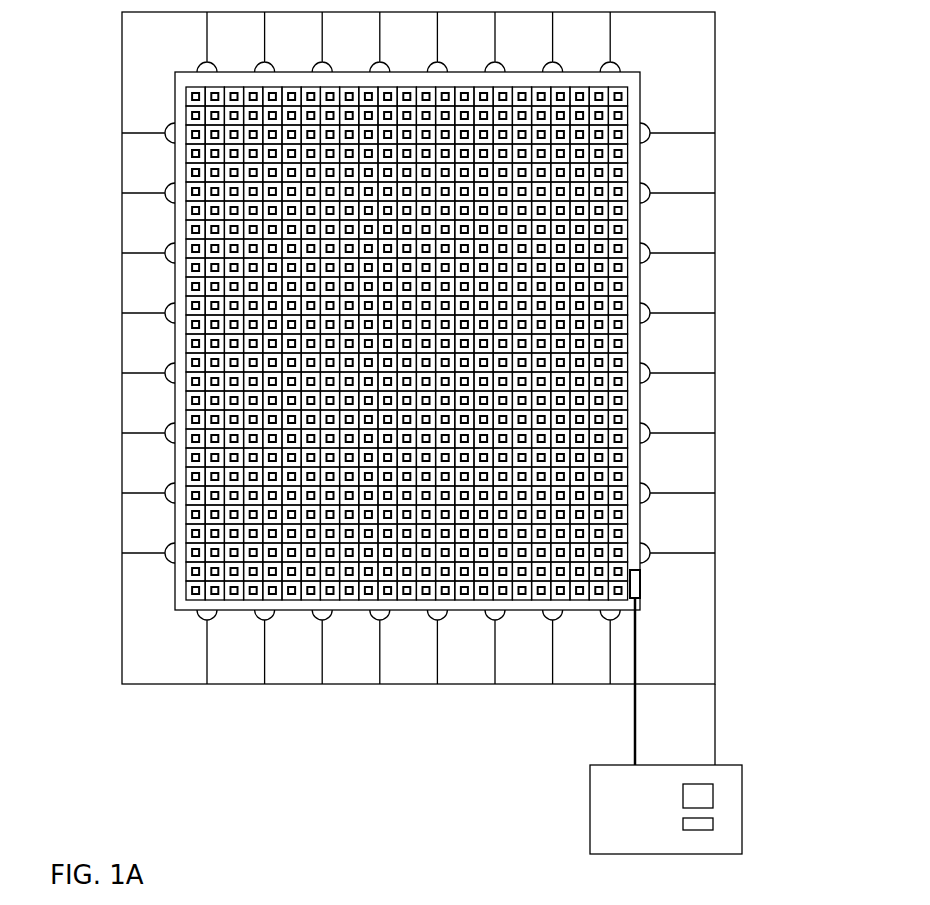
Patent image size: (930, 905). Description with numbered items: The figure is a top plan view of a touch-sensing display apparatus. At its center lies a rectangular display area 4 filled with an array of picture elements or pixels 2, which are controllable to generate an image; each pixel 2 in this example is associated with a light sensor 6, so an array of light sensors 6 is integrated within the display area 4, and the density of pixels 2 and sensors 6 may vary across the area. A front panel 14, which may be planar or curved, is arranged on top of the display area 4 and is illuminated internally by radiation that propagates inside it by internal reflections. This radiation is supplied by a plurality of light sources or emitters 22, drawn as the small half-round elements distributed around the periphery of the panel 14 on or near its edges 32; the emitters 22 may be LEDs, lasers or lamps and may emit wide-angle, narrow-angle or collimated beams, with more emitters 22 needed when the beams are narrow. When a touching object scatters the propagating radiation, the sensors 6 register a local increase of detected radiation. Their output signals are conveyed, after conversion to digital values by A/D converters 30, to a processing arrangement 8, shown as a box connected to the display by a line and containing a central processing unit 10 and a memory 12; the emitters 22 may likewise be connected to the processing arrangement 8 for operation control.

The pixels 2 is at (192, 378).
The display area 4 is at (634, 409).
The light sensors 6 is at (195, 153).
The processing arrangement 8 is at (589, 811).
The central processing unit 10 is at (703, 797).
The memory 12 is at (705, 826).
The front panel 14 is at (645, 93).
The emitters 22 is at (649, 312).
The A/D converters 30 is at (638, 573).
The edges 32 is at (412, 72).